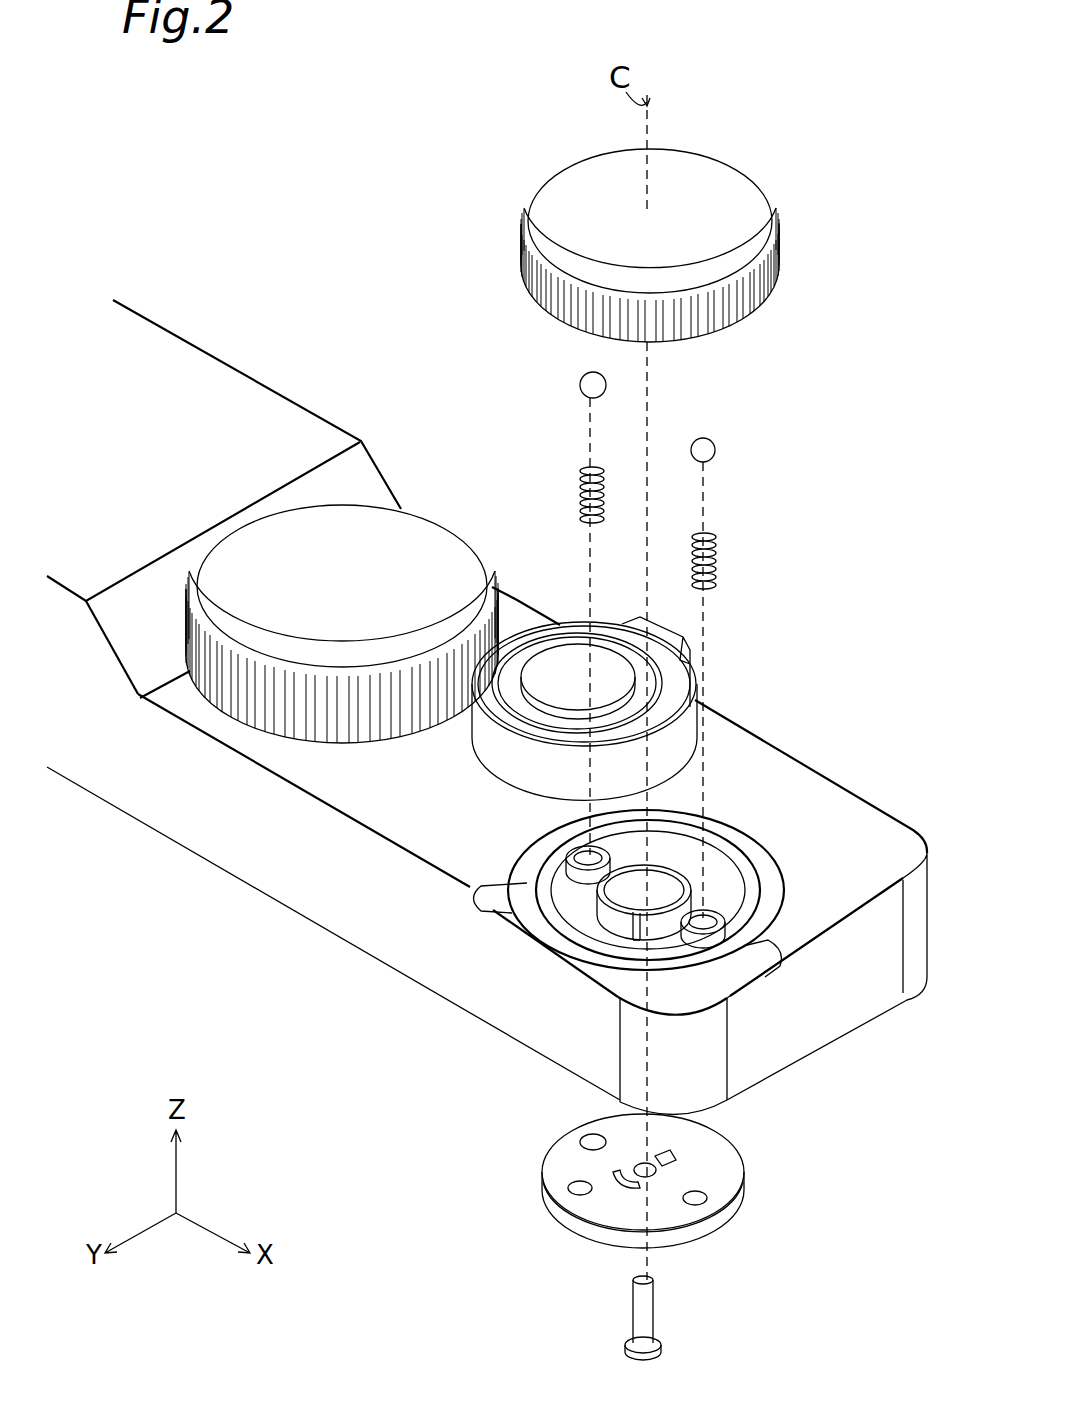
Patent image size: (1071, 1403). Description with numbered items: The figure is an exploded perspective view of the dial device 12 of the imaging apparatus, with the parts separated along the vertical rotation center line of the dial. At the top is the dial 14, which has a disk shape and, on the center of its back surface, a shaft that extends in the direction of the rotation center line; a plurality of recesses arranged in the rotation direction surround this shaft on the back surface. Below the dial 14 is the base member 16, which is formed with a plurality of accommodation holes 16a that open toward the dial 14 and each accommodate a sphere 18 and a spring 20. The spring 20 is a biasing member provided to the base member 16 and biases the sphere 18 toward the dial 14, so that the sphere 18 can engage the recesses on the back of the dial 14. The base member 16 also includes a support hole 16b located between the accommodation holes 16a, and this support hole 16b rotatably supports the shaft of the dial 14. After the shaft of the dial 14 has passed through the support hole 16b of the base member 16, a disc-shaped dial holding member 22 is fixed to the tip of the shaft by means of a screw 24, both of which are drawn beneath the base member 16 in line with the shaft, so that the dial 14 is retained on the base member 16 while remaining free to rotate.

The dial device 12 is at (613, 231).
The dial 14 is at (736, 190).
The base member 16 is at (738, 862).
The accommodation holes 16a is at (572, 855).
The support hole 16b is at (612, 890).
The sphere 18 is at (581, 384).
The spring 20 is at (582, 472).
The dial holding member 22 is at (567, 1147).
The screw 24 is at (657, 1311).